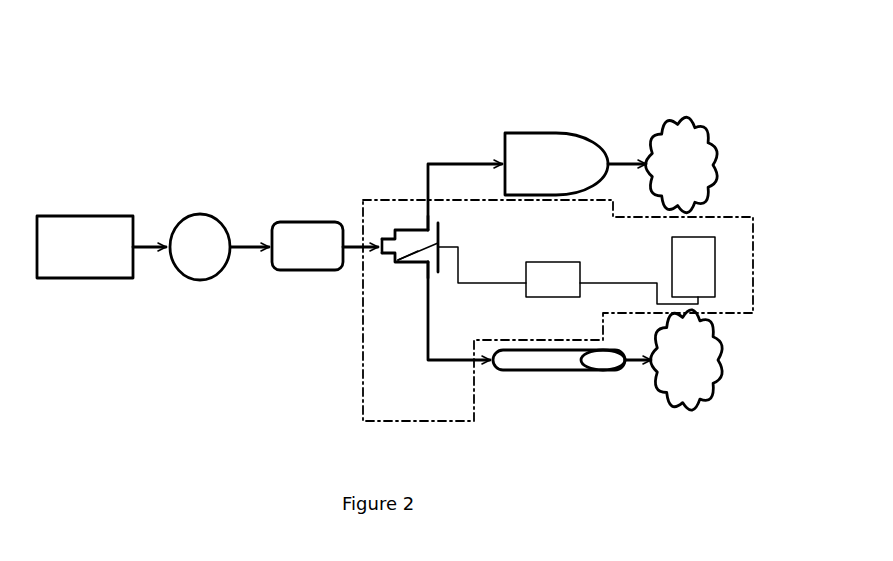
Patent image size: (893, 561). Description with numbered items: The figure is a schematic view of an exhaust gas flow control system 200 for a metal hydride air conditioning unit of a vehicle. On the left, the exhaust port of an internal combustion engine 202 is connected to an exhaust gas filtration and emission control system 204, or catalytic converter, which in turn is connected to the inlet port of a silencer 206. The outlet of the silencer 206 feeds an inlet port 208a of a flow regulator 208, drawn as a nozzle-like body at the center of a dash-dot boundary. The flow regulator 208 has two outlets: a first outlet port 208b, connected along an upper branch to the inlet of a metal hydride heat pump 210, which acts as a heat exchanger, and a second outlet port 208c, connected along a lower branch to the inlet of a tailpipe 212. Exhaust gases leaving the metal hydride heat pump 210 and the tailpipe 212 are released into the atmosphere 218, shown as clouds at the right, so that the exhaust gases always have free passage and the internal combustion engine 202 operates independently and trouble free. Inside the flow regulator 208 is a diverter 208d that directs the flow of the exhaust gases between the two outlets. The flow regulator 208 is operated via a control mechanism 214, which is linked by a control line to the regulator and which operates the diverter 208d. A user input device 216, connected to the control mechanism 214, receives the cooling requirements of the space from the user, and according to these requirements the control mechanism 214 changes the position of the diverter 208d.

The exhaust gas flow control system 200 is at (565, 86).
The internal combustion engine 202 is at (87, 280).
The exhaust gas filtration and emission control system 204 is at (198, 283).
The silencer 206 is at (278, 273).
The flow regulator 208 is at (402, 227).
The inlet port 208a is at (378, 253).
The first outlet port 208b is at (424, 211).
The second outlet port 208c is at (424, 275).
The diverter 208d is at (412, 259).
The metal hydride heat pump 210 is at (526, 129).
The tailpipe 212 is at (546, 372).
The control mechanism 214 is at (545, 260).
The user input device 216 is at (668, 248).
The atmosphere 218 is at (693, 119).